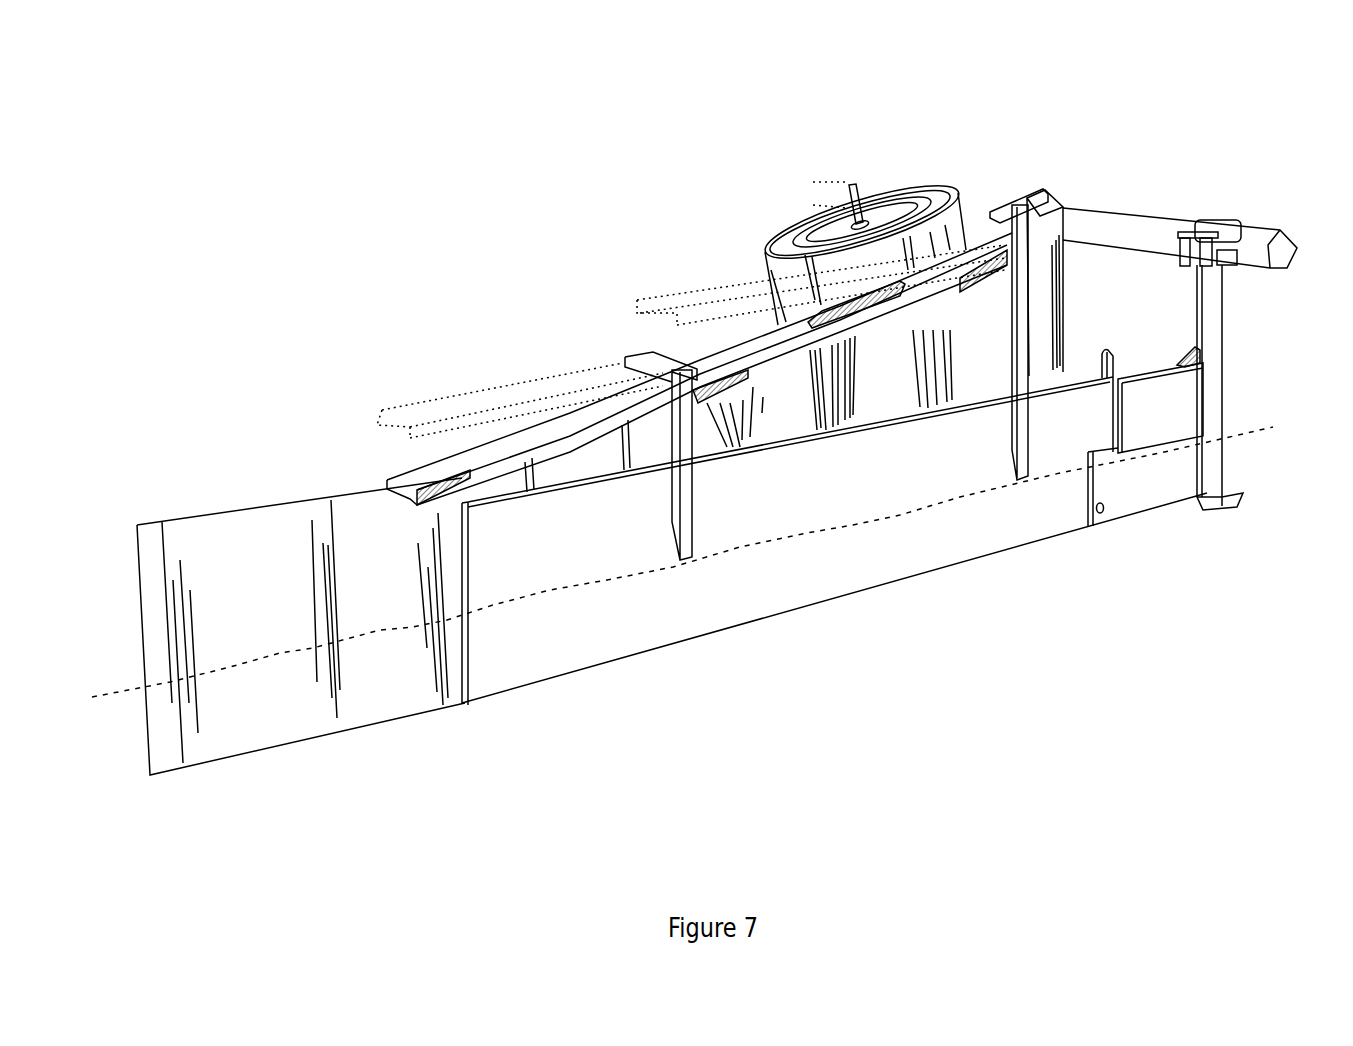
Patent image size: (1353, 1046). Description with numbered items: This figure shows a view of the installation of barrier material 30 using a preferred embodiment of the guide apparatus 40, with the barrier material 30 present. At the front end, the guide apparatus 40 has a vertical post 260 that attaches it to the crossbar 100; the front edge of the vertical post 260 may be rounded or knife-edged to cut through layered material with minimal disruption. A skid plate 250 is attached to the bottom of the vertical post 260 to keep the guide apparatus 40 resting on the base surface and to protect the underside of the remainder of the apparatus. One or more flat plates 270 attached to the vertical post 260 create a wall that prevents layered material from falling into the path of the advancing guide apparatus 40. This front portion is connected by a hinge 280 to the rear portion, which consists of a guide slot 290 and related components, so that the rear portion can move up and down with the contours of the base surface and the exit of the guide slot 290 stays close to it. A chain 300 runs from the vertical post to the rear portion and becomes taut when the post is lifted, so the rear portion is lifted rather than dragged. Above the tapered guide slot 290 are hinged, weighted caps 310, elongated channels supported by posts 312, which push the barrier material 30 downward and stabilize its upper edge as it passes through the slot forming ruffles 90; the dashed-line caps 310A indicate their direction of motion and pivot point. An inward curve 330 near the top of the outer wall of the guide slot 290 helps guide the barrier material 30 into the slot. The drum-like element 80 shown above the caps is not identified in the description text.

The barrier material 30 is at (287, 717).
The guide apparatus 40 is at (790, 672).
The drum 80 is at (784, 250).
The ruffles 90 is at (832, 370).
The crossbar 100 is at (1117, 227).
The skid plate 250 is at (1227, 497).
The vertical post 260 is at (1213, 357).
The flat plates 270 is at (1175, 403).
The hinge 280 is at (1100, 512).
The guide slot 290 is at (650, 627).
The chain 300 is at (1183, 350).
The caps 310 is at (723, 358).
The caps (dashed line images) 310A is at (418, 415).
The posts 312 is at (673, 492).
The inward curve 330 is at (1105, 348).